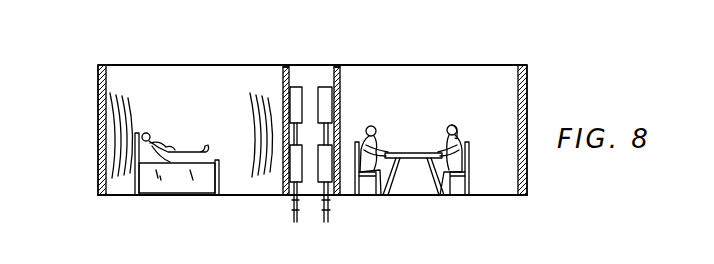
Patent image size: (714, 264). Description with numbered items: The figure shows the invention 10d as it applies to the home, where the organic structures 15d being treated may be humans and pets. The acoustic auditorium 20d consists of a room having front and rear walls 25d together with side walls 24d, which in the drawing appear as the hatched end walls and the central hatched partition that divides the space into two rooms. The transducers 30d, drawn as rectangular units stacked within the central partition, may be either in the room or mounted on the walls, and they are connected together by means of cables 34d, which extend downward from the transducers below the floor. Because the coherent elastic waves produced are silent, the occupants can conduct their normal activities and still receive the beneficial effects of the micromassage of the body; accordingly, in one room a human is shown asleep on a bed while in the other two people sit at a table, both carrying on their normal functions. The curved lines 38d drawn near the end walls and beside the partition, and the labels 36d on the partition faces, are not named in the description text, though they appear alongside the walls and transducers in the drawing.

The invention 10d is at (88, 80).
The front and rear walls 25d is at (164, 74).
The sound waves 38d is at (118, 137).
The acoustic auditorium 20d is at (411, 60).
The partition wall panels 36d is at (282, 82).
The side walls 24d is at (337, 67).
The transducers 30d is at (320, 88).
The cables 34d is at (328, 222).
The organic structures 15d is at (160, 130).